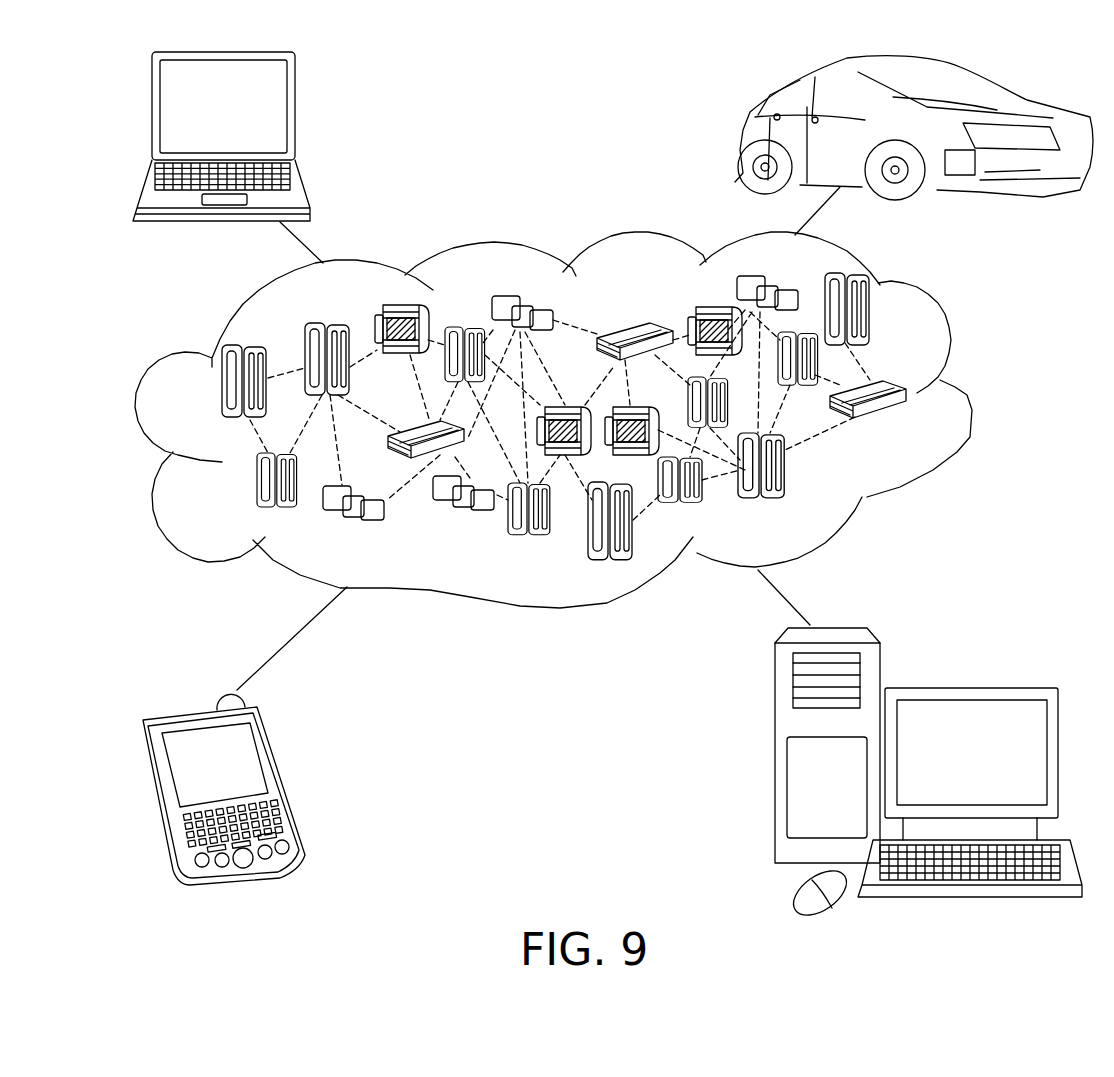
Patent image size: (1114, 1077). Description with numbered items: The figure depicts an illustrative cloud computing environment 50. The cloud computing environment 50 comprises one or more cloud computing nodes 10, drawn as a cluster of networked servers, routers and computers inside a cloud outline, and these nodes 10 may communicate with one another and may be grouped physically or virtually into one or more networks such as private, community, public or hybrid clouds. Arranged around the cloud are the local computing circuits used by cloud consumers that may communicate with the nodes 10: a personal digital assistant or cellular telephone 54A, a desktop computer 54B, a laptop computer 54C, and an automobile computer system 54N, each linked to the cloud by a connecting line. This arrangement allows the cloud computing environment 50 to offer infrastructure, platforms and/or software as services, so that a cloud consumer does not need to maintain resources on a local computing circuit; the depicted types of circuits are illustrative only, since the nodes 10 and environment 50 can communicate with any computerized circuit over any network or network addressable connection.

The cloud computing environment 50 is at (975, 395).
The cloud computing nodes 10 is at (910, 427).
The personal digital assistant (PDA) or cellular telephone 54A is at (280, 787).
The desktop computer 54B is at (968, 688).
The laptop computer 54C is at (295, 118).
The automobile computer system 54N is at (747, 137).